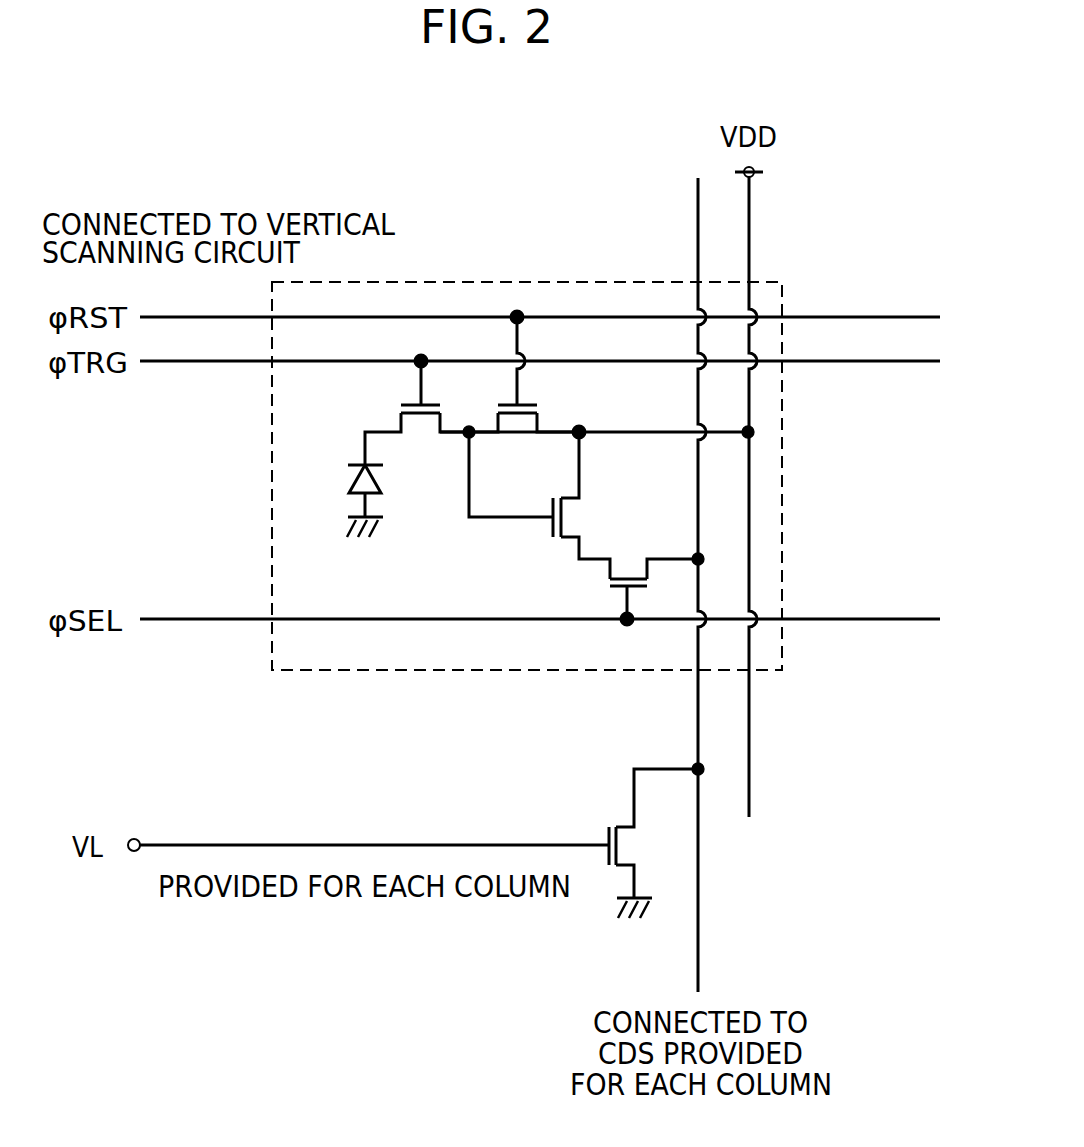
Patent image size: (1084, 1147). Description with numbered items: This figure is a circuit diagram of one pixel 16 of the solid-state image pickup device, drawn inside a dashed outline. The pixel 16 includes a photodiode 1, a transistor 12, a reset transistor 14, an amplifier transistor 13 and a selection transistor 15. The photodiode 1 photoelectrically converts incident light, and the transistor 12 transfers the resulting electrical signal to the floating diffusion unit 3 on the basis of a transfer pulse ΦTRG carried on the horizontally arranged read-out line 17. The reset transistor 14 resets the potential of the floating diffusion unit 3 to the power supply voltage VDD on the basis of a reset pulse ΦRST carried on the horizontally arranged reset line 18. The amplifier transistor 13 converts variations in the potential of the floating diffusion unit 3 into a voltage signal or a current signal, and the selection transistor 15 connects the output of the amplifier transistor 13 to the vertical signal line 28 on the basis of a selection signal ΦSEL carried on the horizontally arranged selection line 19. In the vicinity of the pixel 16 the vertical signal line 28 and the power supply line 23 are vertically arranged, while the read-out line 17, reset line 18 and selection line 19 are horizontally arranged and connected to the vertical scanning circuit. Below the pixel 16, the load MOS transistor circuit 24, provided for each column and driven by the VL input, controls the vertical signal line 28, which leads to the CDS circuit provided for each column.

The photodiode 1 is at (348, 470).
The floating diffusion unit 3 is at (469, 426).
The transistor 12 is at (397, 408).
The amplifier transistor 13 is at (571, 512).
The reset transistor 14 is at (540, 408).
The selection transistor 15 is at (640, 553).
The pixel 16 is at (782, 470).
The read-out line 17 is at (878, 362).
The reset line 18 is at (878, 316).
The selection line 19 is at (878, 618).
The power supply line 23 is at (750, 748).
The load MOS transistor circuit 24 is at (612, 822).
The vertical signal line 28 is at (697, 193).